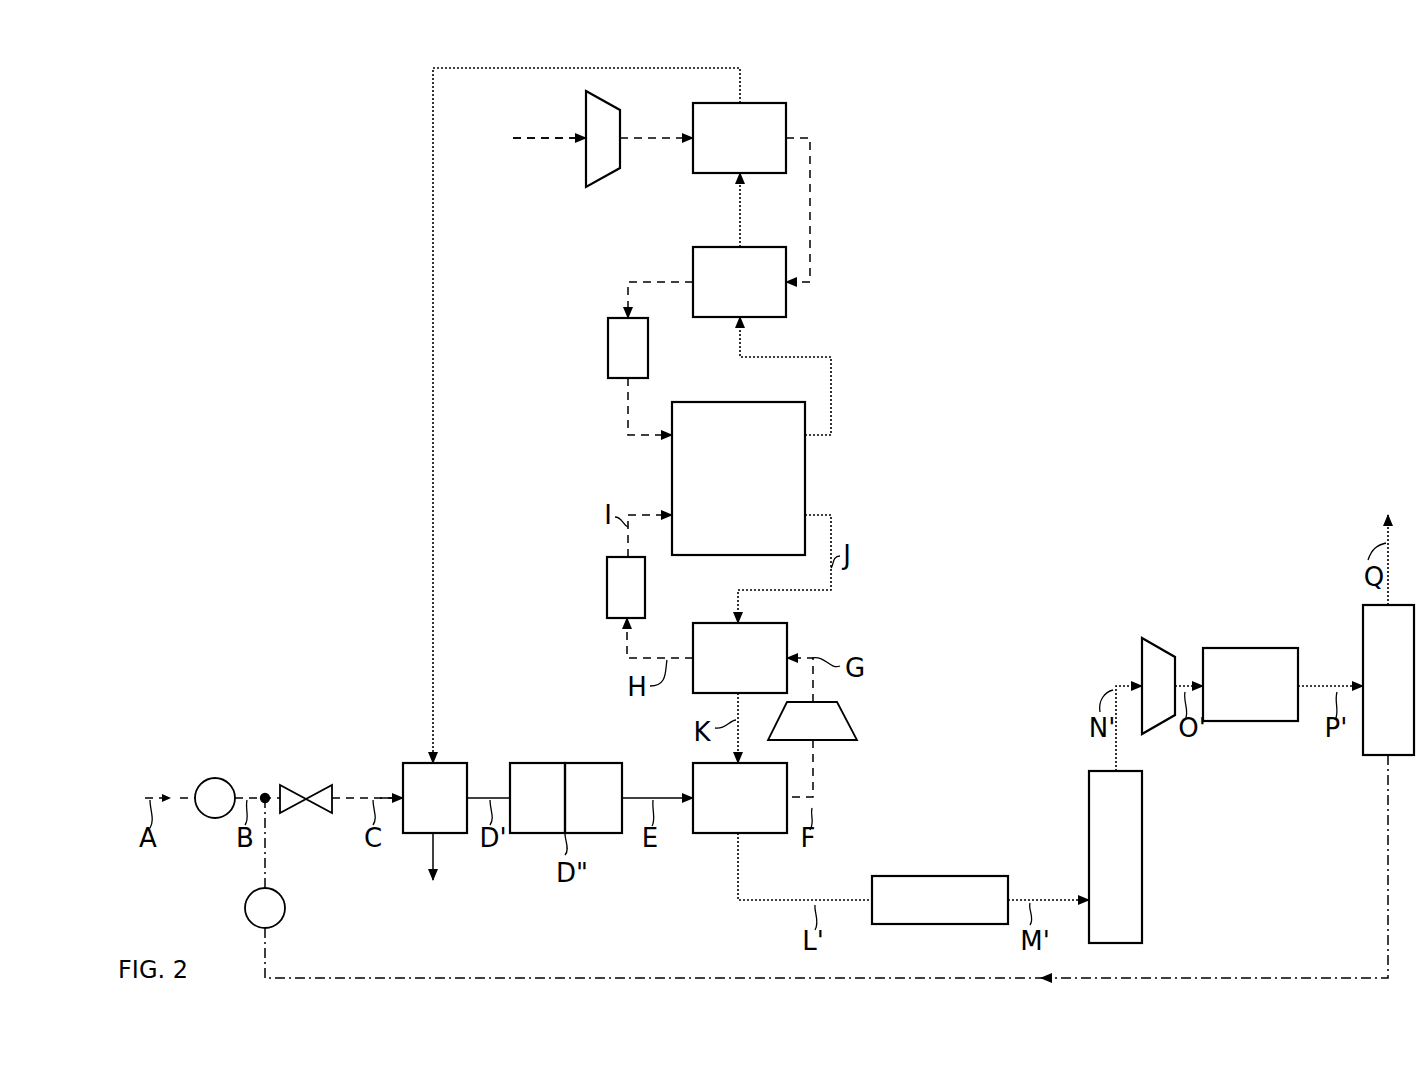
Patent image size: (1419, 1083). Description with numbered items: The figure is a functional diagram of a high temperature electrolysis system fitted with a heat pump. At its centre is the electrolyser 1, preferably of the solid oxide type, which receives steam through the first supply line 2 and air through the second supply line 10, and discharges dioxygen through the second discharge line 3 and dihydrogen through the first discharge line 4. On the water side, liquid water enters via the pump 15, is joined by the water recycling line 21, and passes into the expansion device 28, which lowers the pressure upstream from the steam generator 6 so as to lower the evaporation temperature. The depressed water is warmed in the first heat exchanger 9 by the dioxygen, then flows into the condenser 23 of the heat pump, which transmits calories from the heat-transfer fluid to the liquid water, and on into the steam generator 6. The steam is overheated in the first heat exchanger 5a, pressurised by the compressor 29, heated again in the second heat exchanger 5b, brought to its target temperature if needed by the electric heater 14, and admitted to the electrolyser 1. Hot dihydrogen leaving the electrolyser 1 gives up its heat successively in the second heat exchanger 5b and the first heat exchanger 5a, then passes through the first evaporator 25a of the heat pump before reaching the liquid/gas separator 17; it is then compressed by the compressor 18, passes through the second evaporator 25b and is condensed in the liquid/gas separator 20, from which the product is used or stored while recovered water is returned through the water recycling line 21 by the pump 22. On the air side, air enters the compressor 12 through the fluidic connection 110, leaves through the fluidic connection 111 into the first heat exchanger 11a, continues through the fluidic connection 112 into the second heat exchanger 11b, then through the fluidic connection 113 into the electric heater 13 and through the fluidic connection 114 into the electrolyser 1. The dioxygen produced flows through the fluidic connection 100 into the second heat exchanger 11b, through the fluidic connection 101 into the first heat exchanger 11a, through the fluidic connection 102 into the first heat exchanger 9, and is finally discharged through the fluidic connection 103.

The electrolyser 1 is at (738, 478).
The first supply line 2 is at (620, 643).
The second discharge line 3 is at (822, 348).
The first discharge line 4 is at (822, 594).
The first heat exchanger of the first heat exchange module 5a is at (740, 798).
The second heat exchanger of the first heat exchange module 5b is at (740, 658).
The steam generator 6 is at (593, 798).
The first heat exchanger 9 is at (435, 798).
The second supply line 10 is at (530, 150).
The first heat exchanger of the second heat exchange module 11a is at (739, 138).
The second heat exchanger of the second heat exchange module 11b is at (739, 282).
The compressor 12 is at (603, 139).
The electric heater 13 is at (628, 348).
The electric heater 14 is at (626, 587).
The pump 15 is at (215, 798).
The liquid/gas separator 17 is at (1115, 857).
The compressor 18 is at (1158, 686).
The liquid/gas separator 20 is at (1388, 680).
The water recycling line 21 is at (1277, 977).
The pump 22 is at (643, 888).
The condenser 23 is at (537, 798).
The first evaporator 25a is at (940, 900).
The second evaporator 25b is at (1250, 684).
The expansion device 28 is at (320, 784).
The compressor 29 is at (812, 721).
The fluidic connection 100 is at (832, 410).
The fluidic connection 101 is at (740, 220).
The fluidic connection 102 is at (742, 75).
The fluidic connection 103 is at (438, 858).
The fluidic connection 110 is at (545, 137).
The fluidic connection 111 is at (667, 140).
The fluidic connection 112 is at (811, 195).
The fluidic connection 113 is at (628, 297).
The fluidic connection 114 is at (627, 415).